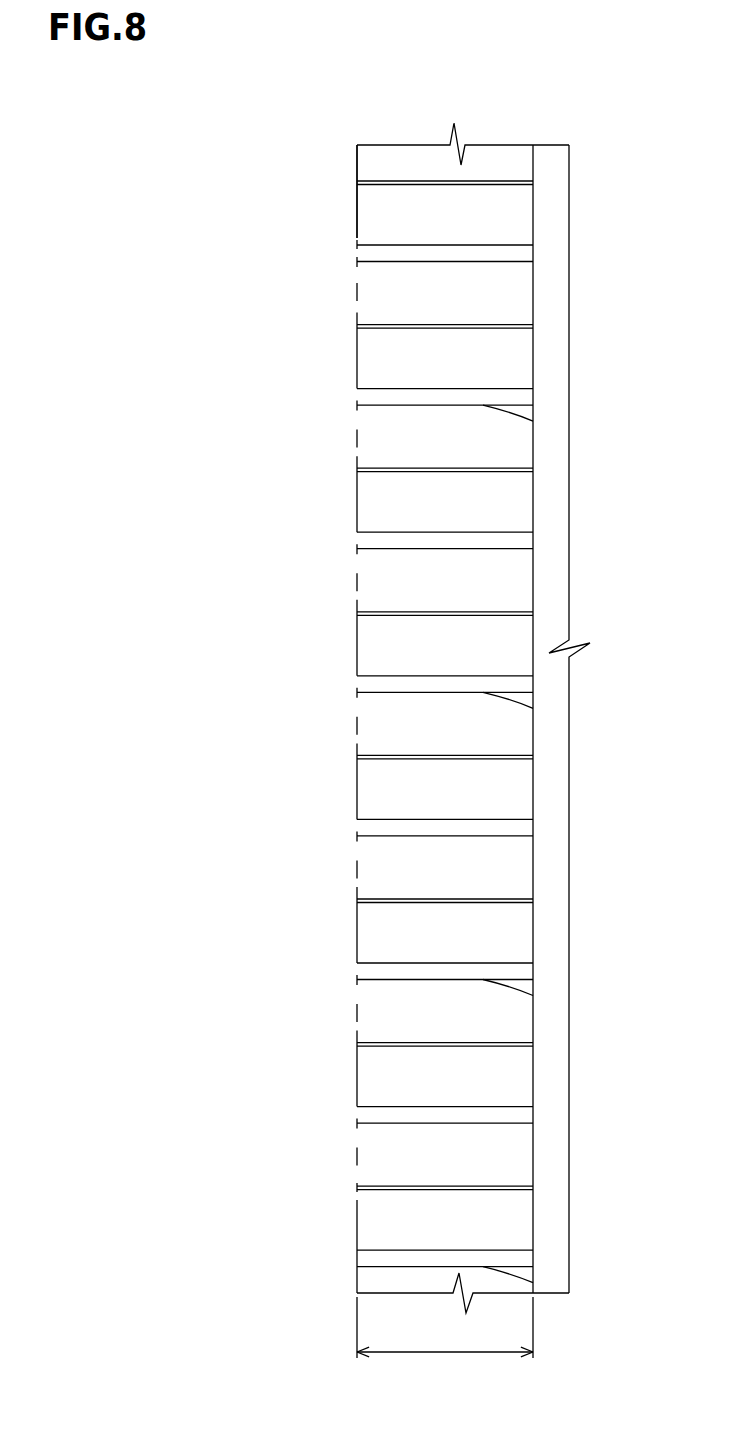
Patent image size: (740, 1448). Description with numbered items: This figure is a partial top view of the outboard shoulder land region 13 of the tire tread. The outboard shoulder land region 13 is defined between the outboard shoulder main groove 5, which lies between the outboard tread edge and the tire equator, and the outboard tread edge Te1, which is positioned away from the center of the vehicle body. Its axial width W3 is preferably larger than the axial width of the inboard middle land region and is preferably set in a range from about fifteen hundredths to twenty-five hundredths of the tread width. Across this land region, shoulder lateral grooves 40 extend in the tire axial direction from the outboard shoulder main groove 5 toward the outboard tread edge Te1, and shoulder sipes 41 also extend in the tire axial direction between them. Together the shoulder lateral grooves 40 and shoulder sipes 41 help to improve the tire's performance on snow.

The outboard shoulder main groove 5 is at (549, 192).
The outboard shoulder land region 13 is at (431, 216).
The shoulder lateral groove 40 is at (443, 399).
The shoulder sipe 41 is at (437, 468).
The outboard tread edge Te1 is at (357, 207).
The axial width of the outboard shoulder land region W3 is at (445, 1342).